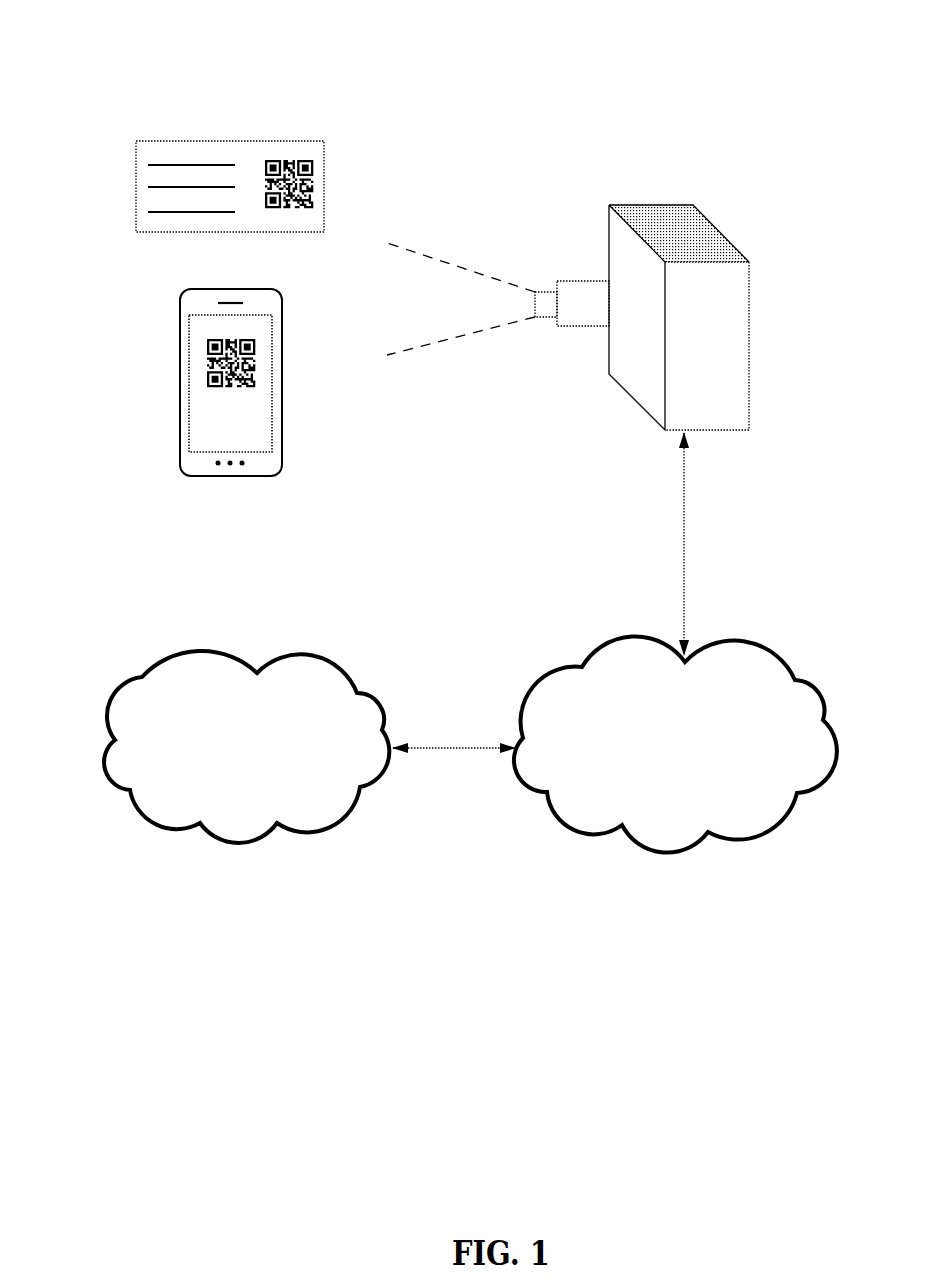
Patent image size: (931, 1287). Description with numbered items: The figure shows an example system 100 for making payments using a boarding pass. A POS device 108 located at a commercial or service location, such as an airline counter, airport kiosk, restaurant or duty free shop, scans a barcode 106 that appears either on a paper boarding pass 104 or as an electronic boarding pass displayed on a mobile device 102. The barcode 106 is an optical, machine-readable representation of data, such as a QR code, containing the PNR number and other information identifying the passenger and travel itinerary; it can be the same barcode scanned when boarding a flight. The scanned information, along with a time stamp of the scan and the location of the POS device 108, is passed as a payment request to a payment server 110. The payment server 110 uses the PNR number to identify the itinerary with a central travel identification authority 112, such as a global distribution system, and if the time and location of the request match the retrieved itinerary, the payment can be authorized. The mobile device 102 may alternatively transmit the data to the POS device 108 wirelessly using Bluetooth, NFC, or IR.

The system 100 is at (118, 34).
The mobile device 102 is at (179, 309).
The paper boarding pass 104 is at (136, 141).
The barcode 106 is at (255, 362).
The POS device 108 is at (608, 252).
The payment server 110 is at (675, 744).
The central travel identification authority 112 is at (246, 747).